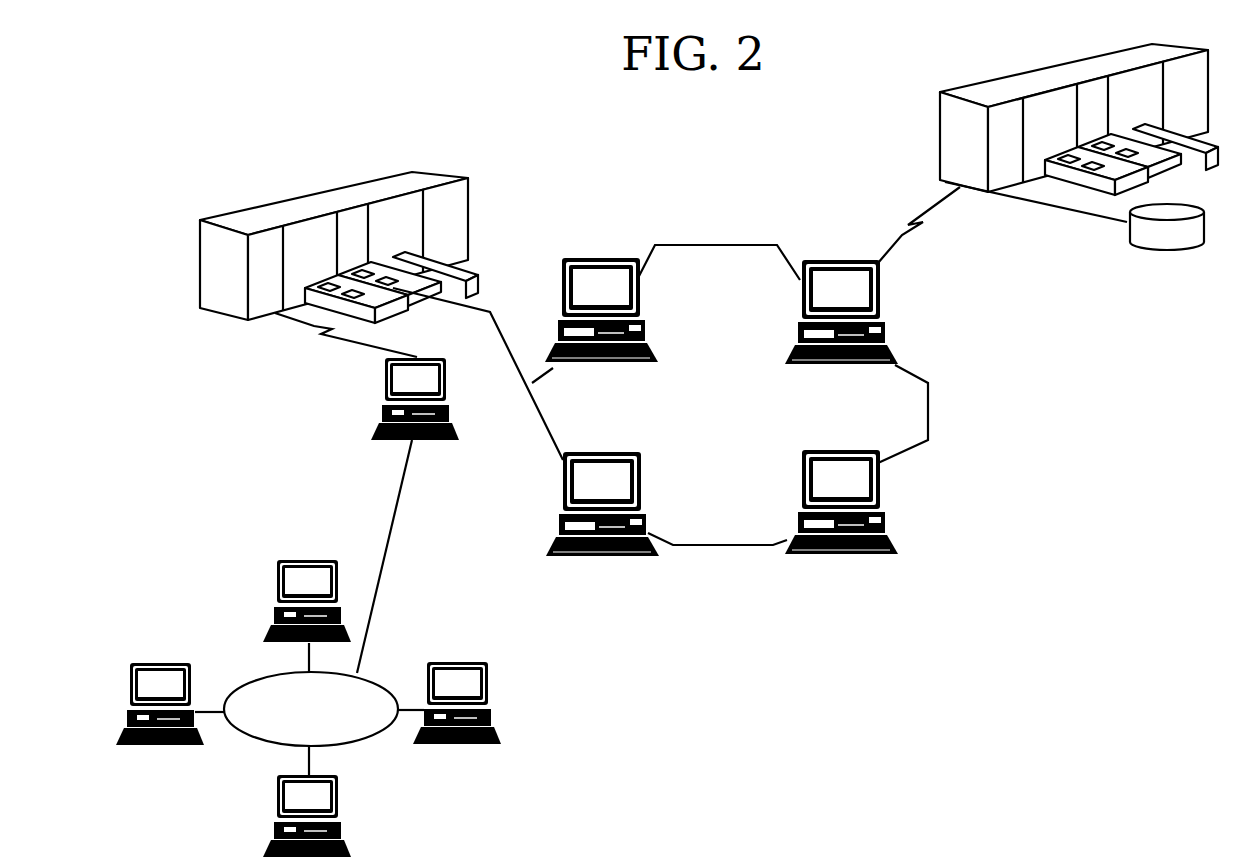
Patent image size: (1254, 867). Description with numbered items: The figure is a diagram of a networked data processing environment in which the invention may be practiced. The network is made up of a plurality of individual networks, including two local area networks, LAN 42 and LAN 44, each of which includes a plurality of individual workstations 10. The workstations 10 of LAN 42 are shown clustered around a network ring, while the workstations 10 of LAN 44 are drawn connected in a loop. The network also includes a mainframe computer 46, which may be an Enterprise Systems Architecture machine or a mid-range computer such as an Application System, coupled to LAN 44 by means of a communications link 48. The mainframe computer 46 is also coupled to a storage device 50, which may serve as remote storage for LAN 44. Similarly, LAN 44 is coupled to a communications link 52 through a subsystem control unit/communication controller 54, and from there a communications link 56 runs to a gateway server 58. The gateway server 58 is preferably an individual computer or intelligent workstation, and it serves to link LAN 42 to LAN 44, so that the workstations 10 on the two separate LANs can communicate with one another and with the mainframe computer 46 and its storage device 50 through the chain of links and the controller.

The workstation 10 is at (598, 257).
The LAN 42 is at (309, 720).
The LAN 44 is at (782, 395).
The mainframe computer 46 is at (1000, 75).
The communications link 48 is at (930, 203).
The storage device 50 is at (1210, 215).
The communications link 52 is at (500, 324).
The subsystem control unit/communication controller 54 is at (340, 187).
The communications link 56 is at (313, 327).
The gateway server 58 is at (447, 372).